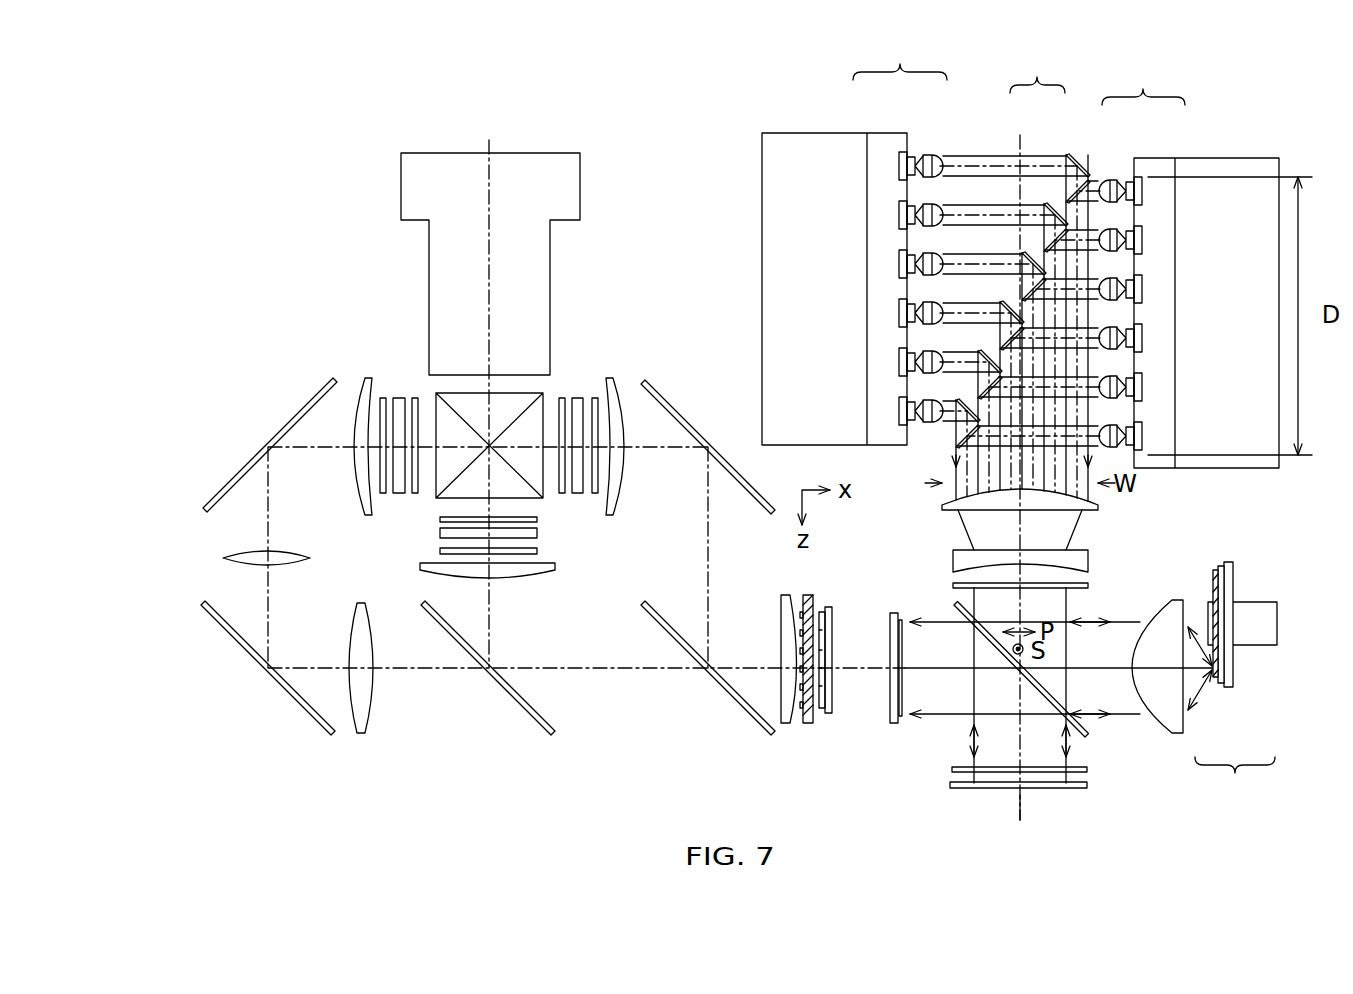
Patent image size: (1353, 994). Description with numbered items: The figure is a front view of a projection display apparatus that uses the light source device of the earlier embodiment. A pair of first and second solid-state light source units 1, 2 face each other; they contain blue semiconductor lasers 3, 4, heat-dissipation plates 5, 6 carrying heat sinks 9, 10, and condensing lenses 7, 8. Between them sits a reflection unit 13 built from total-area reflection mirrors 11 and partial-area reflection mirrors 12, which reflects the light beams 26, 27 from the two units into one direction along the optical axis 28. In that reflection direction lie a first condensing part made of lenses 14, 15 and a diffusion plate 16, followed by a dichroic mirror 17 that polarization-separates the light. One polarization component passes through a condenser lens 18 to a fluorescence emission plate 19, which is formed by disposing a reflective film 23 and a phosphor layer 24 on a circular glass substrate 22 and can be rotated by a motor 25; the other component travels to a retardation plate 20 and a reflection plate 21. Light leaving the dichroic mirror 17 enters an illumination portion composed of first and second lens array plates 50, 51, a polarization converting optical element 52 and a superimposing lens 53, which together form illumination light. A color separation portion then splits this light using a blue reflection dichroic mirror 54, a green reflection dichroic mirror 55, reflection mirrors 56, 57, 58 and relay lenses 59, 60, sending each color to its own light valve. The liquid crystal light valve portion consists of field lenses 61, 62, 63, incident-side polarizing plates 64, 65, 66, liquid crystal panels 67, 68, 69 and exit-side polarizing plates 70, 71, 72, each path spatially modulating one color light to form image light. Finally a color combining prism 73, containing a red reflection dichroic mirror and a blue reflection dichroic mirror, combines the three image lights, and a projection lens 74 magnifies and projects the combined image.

The first solid-state light source unit 1 is at (900, 57).
The second solid-state light source unit 2 is at (1143, 82).
The blue semiconductor laser 3 is at (911, 157).
The blue semiconductor laser 4 is at (1130, 182).
The heat-dissipation plate 5 is at (885, 150).
The heat-dissipation plate 6 is at (1158, 158).
The condensing lens 7 is at (933, 154).
The condensing lens 8 is at (1112, 180).
The heat sink 9 is at (820, 133).
The heat sink 10 is at (1222, 158).
The total-area reflection mirror 11 is at (1063, 152).
The partial-area reflection mirror 12 is at (1027, 152).
The reflection unit 13 is at (1037, 68).
The lens 14 is at (1098, 508).
The lens 15 is at (1088, 562).
The diffusion plate 16 is at (1088, 586).
The dichroic mirror 17 is at (1090, 735).
The condenser lens 18 is at (1178, 735).
The fluorescence emission plate 19 is at (1235, 777).
The retardation plate 20 is at (1087, 770).
The reflection plate 21 is at (1087, 785).
The circular glass substrate 22 is at (1228, 687).
The reflective film 23 is at (1221, 683).
The phosphor layer 24 is at (1215, 677).
The motor 25 is at (1250, 648).
The light beam 26 is at (972, 156).
The light beam 27 is at (1077, 185).
The optical axis 28 is at (1020, 808).
The first lens array plate 50 is at (894, 723).
The second lens array plate 51 is at (828, 713).
The polarization converting optical element 52 is at (808, 723).
The superimposing lens 53 is at (788, 723).
The blue reflection dichroic mirror 54 is at (760, 726).
The green reflection dichroic mirror 55 is at (540, 726).
The reflection mirror 56 is at (664, 392).
The reflection mirror 57 is at (318, 726).
The reflection mirror 58 is at (320, 390).
The relay lens 59 is at (361, 735).
The relay lens 60 is at (223, 558).
The field lens 61 is at (525, 578).
The field lens 62 is at (614, 378).
The field lens 63 is at (364, 378).
The incident-side polarizing plate 64 is at (537, 551).
The incident-side polarizing plate 65 is at (595, 398).
The incident-side polarizing plate 66 is at (383, 398).
The liquid crystal panel 67 is at (440, 533).
The liquid crystal panel 68 is at (578, 398).
The liquid crystal panel 69 is at (399, 398).
The exit-side polarizing plate 70 is at (537, 520).
The exit-side polarizing plate 71 is at (562, 398).
The exit-side polarizing plate 72 is at (415, 398).
The color combining prism 73 is at (436, 492).
The projection lens 74 is at (580, 187).